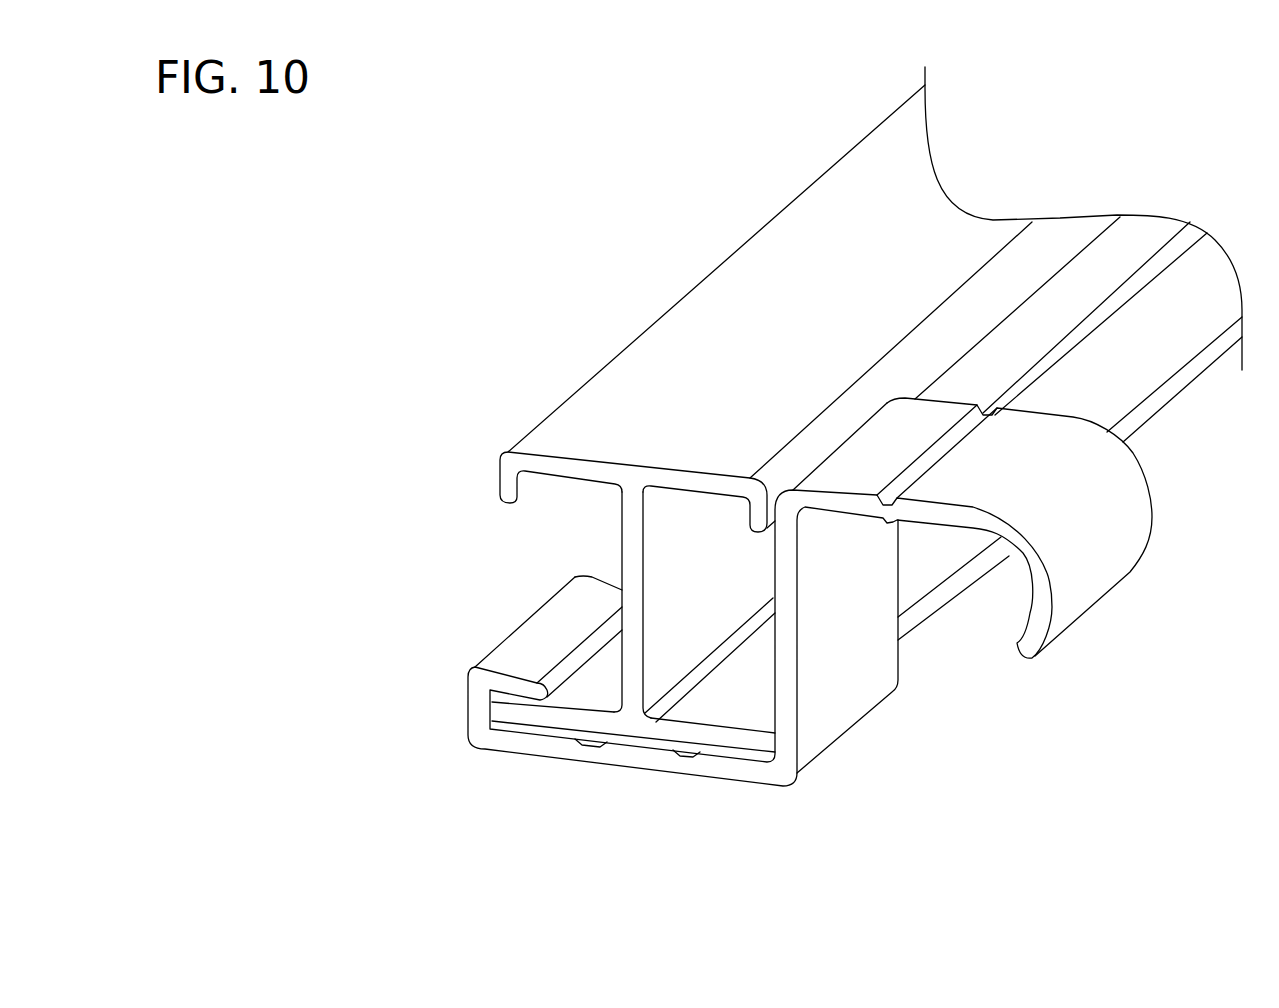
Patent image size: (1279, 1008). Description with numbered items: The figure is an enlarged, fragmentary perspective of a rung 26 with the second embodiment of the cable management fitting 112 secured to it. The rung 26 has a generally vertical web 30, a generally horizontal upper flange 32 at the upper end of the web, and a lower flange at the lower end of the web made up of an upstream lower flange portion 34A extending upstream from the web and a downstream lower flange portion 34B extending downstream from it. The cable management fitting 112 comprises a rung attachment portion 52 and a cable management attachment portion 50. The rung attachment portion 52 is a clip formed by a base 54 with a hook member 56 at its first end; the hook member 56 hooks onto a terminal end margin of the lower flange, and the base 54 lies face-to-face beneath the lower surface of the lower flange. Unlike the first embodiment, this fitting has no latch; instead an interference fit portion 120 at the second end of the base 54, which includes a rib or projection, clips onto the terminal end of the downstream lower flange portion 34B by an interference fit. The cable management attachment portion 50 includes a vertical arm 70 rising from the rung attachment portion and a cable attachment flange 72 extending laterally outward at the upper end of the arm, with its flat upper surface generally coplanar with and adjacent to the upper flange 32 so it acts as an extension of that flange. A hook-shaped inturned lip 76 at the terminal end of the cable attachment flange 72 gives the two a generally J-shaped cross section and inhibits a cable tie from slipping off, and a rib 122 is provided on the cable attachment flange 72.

The rung 26 is at (867, 458).
The vertical web 30 is at (623, 527).
The upper flange 32 is at (580, 380).
The upstream lower flange portion 34A is at (530, 713).
The downstream lower flange portion 34B is at (710, 737).
The cable management attachment portion 50 is at (764, 564).
The rung attachment portion 52 is at (572, 712).
The base 54 is at (607, 760).
The hook member 56 is at (483, 680).
The vertical arm 70 is at (847, 620).
The cable attachment flange 72 is at (942, 416).
The inturned lip 76 is at (1083, 588).
The cable management fitting 112 is at (818, 818).
The interference fit portion 120 is at (755, 752).
The rib 122 is at (887, 522).